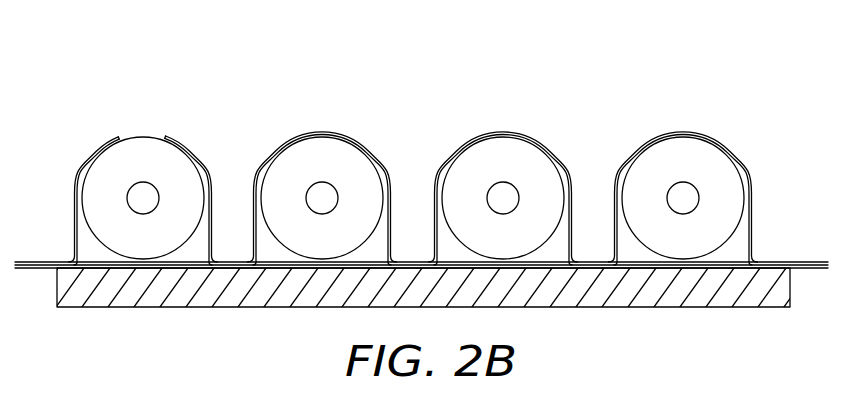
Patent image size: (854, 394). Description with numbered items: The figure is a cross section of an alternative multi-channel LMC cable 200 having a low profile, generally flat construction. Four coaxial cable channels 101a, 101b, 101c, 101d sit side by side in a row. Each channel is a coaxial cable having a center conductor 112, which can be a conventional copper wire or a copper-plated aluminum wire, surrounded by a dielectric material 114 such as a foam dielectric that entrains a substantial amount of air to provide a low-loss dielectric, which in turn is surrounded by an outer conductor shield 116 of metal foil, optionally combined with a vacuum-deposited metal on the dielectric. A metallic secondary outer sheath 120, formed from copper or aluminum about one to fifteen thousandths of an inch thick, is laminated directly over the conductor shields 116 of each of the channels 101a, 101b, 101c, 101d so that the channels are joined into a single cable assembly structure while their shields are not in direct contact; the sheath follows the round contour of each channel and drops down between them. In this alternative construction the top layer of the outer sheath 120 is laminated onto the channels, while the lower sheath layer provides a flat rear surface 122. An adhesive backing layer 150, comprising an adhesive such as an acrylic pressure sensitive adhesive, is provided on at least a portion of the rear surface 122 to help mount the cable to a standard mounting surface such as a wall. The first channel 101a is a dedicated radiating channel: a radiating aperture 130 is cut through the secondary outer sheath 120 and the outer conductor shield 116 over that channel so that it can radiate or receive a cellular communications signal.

The LMC cable 200 is at (110, 50).
The radiating aperture 130 is at (133, 130).
The first channel 101a is at (162, 220).
The channel 101b is at (360, 140).
The channel 101c is at (545, 140).
The channel 101d is at (725, 140).
The center conductor 112 is at (162, 196).
The dielectric material 114 is at (163, 238).
The outer conductor shield 116 is at (85, 165).
The metallic secondary outer sheath 120 is at (421, 175).
The flat rear surface 122 is at (35, 269).
The adhesive backing layer 150 is at (97, 300).